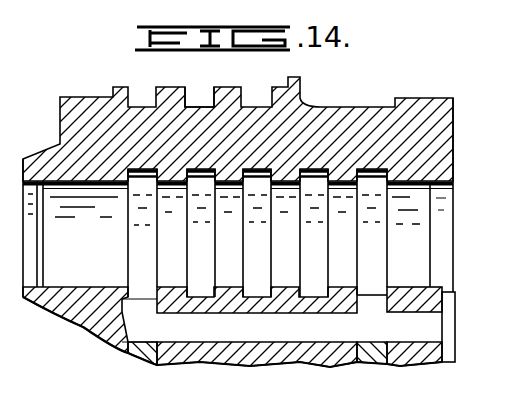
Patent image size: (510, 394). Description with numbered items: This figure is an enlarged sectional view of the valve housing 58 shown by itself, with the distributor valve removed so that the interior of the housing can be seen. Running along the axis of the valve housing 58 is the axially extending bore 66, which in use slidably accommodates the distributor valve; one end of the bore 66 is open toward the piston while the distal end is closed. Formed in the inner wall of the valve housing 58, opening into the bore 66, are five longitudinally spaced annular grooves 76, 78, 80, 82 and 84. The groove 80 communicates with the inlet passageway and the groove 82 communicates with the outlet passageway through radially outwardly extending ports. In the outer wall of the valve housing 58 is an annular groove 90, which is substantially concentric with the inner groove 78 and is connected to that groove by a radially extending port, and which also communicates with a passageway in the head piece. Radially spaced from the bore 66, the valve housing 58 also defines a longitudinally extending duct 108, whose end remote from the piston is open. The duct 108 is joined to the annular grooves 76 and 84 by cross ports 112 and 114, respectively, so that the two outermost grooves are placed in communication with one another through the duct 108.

The valve housing 58 is at (354, 113).
The annular groove 90 is at (193, 105).
The annular groove 76 is at (150, 169).
The annular groove 78 is at (203, 169).
The annular groove 80 is at (259, 169).
The annular groove 82 is at (312, 169).
The annular groove 84 is at (371, 169).
The axially extending bore 66 is at (413, 185).
The cross port 112 is at (133, 300).
The cross port 114 is at (358, 298).
The longitudinally extending duct 108 is at (297, 337).